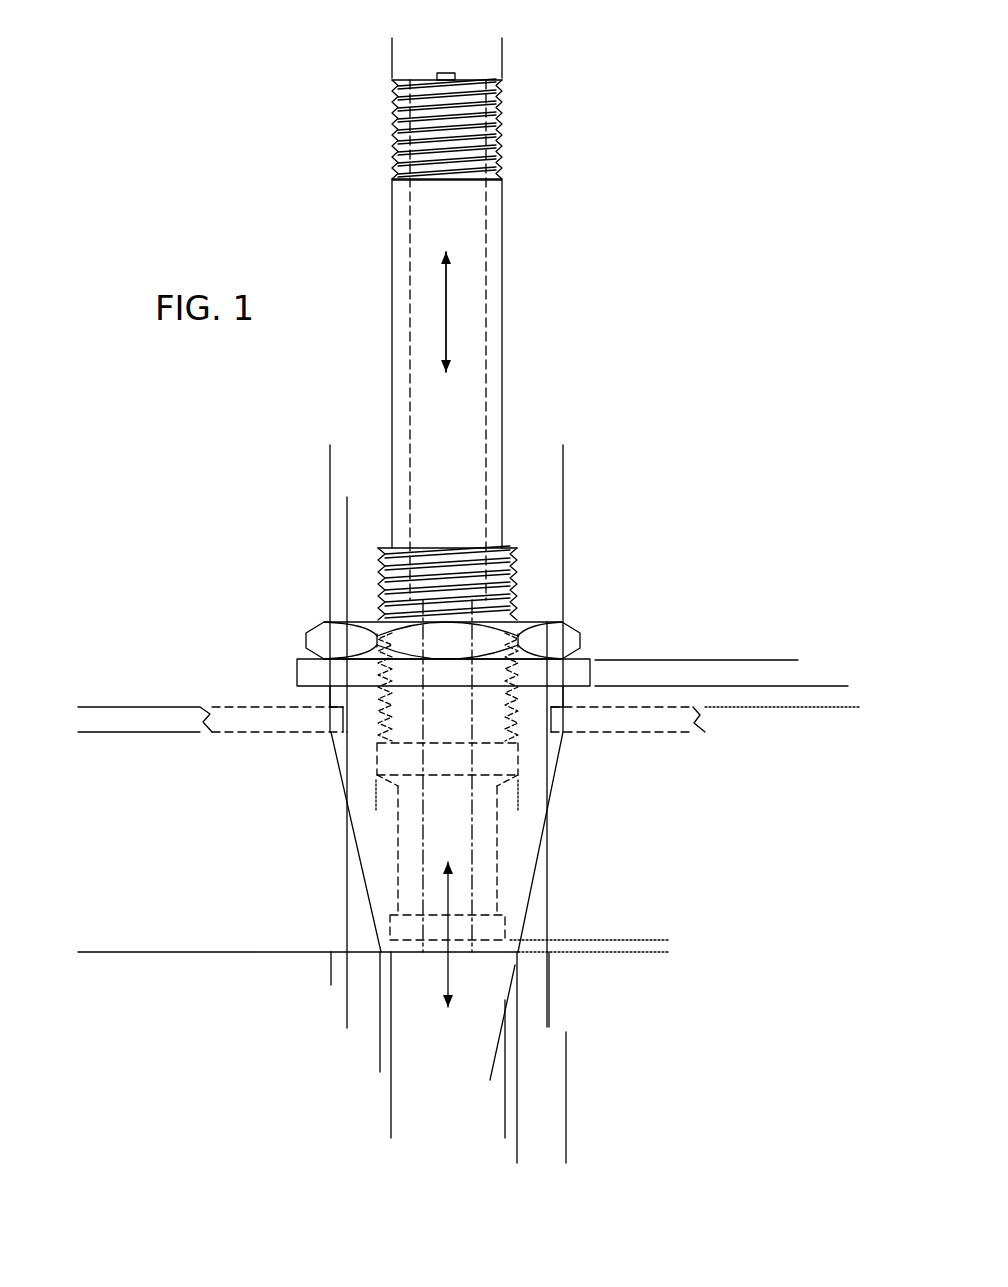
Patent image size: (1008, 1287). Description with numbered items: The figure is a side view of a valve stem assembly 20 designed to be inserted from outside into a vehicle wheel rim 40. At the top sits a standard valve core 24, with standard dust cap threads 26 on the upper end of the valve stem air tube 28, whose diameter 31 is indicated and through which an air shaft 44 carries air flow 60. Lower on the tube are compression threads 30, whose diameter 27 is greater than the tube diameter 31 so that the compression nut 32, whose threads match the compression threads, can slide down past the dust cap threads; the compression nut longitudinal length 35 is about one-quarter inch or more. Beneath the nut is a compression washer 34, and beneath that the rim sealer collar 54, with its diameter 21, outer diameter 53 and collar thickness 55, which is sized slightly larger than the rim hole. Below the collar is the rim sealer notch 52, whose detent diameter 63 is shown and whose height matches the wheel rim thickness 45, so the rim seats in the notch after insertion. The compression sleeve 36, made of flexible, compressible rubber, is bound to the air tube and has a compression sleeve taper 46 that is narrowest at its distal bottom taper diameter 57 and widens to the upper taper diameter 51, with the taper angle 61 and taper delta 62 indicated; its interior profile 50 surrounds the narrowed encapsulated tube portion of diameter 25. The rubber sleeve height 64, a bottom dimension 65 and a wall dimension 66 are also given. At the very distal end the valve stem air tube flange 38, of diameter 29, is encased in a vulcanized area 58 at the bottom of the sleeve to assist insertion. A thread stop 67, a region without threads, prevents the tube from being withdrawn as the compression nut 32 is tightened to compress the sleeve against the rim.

The valve stem assembly 20 is at (680, 498).
The diameter of rim sealer collar 21 is at (596, 468).
The valve core 24 is at (455, 73).
The diameter of narrowed encapsulated valve stem portion 25 is at (368, 837).
The dust cap threads 26 is at (498, 120).
The diameter of compression threads 27 is at (352, 798).
The valve stem air tube 28 is at (502, 368).
The diameter of valve stem air tube flange 29 is at (536, 1102).
The compression threads 30 is at (500, 622).
The diameter of valve stem air tube 31 is at (530, 55).
The compression nut 32 is at (573, 635).
The compression washer 34 is at (297, 671).
The compression nut longitudinal length 35 is at (775, 712).
The compression sleeve 36 is at (563, 773).
The valve stem air tube flange 38 is at (514, 928).
The wheel rim 40 is at (693, 727).
The air shaft 44 is at (460, 413).
The wheel rim thickness 45 is at (158, 762).
The compression sleeve taper 46 is at (354, 829).
The compression sleeve interior profile 50 is at (377, 760).
The upper taper diameter of the compression sleeve 51 is at (331, 971).
The rim sealer notch 52 is at (336, 717).
The rim sealer collar outer diameter 53 is at (374, 520).
The rim sealer collar 54 is at (322, 699).
The rim seal collar thickness 55 is at (833, 733).
The bottom taper diameter 57 is at (546, 1058).
The vulcanized area 58 is at (504, 909).
The air flow 60 is at (446, 292).
The taper angle 61 is at (455, 1057).
The taper delta 62 is at (485, 1150).
The detent diameter 63 is at (576, 1017).
The rubber sleeve height 64 is at (102, 953).
The dimension of approximately 0.254 cm 65 is at (653, 912).
The dimension of approximately three thirty-seconds inch 66 is at (546, 1127).
The thread stop 67 is at (377, 783).